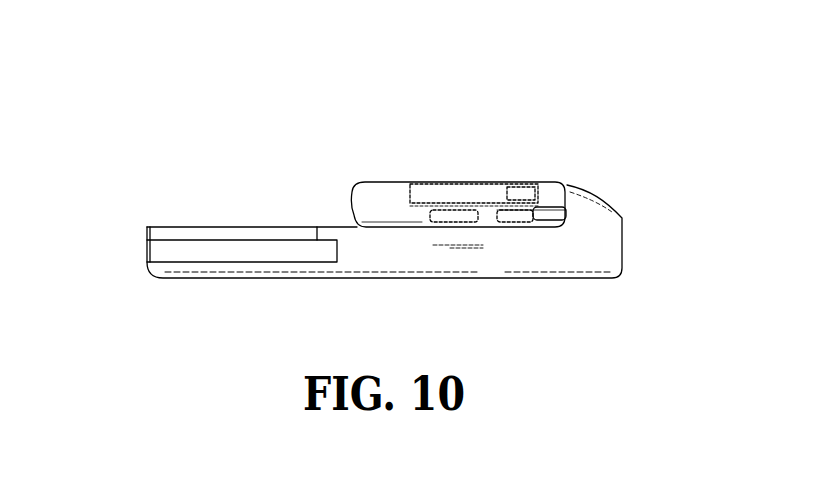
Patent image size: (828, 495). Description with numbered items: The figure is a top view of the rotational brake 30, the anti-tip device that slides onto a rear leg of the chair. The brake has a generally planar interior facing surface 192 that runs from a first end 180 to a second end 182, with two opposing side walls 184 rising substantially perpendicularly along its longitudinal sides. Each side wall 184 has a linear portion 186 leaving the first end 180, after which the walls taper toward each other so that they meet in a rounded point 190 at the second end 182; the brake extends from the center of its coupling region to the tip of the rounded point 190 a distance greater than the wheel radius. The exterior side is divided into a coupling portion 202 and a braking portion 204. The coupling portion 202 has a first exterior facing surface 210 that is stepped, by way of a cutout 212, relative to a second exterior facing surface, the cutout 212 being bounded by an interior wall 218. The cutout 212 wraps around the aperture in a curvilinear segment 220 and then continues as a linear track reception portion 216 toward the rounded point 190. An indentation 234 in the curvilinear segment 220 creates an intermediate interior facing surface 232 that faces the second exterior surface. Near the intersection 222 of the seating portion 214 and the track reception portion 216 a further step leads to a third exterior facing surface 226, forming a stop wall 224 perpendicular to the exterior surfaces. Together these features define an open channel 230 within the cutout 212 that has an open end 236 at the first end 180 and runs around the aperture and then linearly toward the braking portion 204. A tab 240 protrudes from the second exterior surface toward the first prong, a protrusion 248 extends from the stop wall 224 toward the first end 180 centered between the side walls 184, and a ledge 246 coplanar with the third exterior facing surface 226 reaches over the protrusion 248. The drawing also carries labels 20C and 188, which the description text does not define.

The rotational brake 30 is at (135, 106).
The housing assembly 20C is at (385, 184).
The first end 180 is at (158, 271).
The second end 182 is at (610, 268).
The side walls 184 is at (408, 262).
The linear portion 186 is at (315, 273).
The body right portion 188 is at (542, 257).
The rounded point 190 is at (624, 238).
The interior facing surface 192 is at (373, 279).
The coupling portion 202 is at (265, 233).
The braking portion 204 is at (582, 199).
The first exterior facing surface 210 is at (187, 229).
The cutout 212 is at (167, 260).
The seating portion 214 is at (222, 252).
The track reception portion 216 is at (488, 213).
The interior wall 218 is at (230, 227).
The curvilinear segment 220 is at (303, 230).
The intersection 222 is at (360, 223).
The stop wall 224 is at (347, 226).
The third exterior facing surface 226 is at (552, 181).
The open channel 230 is at (146, 248).
The intermediate interior facing surface 232 is at (257, 262).
The indentation 234 is at (185, 252).
The open end 236 is at (143, 266).
The tab 240 is at (460, 215).
The ledge 246 is at (443, 193).
The protrusion 248 is at (568, 222).